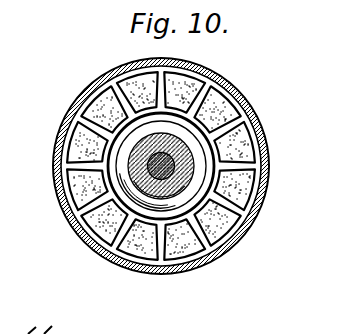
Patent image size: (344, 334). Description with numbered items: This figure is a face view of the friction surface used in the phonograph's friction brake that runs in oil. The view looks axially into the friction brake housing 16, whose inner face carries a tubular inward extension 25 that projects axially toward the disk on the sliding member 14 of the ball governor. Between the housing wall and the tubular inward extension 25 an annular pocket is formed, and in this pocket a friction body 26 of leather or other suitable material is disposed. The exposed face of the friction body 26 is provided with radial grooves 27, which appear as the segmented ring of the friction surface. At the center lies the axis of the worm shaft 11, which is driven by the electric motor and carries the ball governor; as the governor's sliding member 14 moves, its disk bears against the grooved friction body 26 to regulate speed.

The radial grooves 27 is at (69, 106).
The friction brake housing 16 is at (53, 176).
The friction body 26 is at (214, 108).
The tubular inward extension 25 is at (118, 170).
The sliding member 14 is at (174, 184).
The worm shaft 11 is at (158, 180).